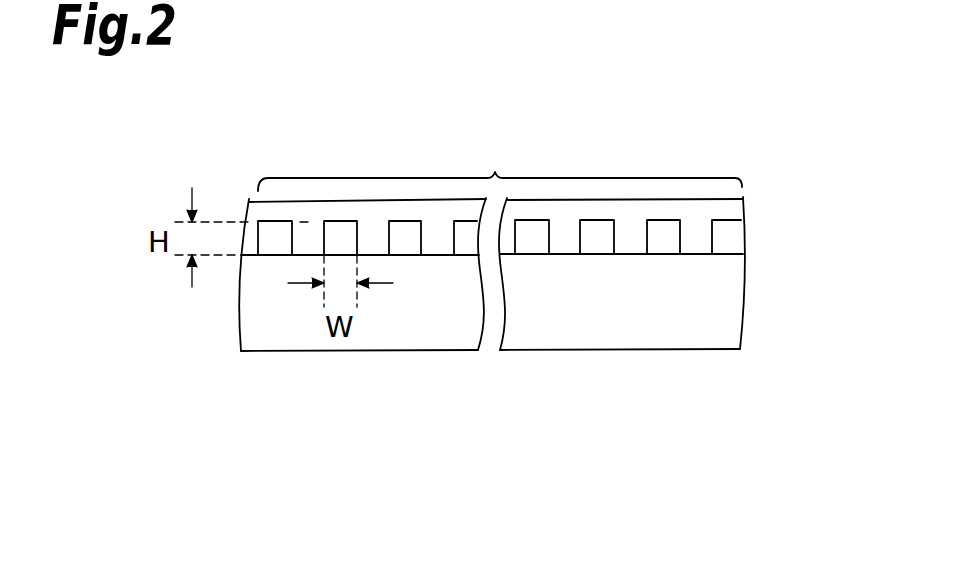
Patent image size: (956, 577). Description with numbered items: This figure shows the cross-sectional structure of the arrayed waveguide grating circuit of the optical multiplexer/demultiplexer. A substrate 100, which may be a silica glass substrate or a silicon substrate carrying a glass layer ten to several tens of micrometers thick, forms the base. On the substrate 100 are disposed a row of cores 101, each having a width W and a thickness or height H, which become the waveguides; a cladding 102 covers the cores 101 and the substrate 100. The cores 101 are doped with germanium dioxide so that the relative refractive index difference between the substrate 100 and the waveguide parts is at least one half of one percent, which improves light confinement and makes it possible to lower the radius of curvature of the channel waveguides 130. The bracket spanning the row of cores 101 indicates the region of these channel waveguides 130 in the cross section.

The substrate 100 is at (727, 333).
The core 101 is at (667, 238).
The cladding 102 is at (727, 211).
The channel waveguides 130 is at (496, 176).